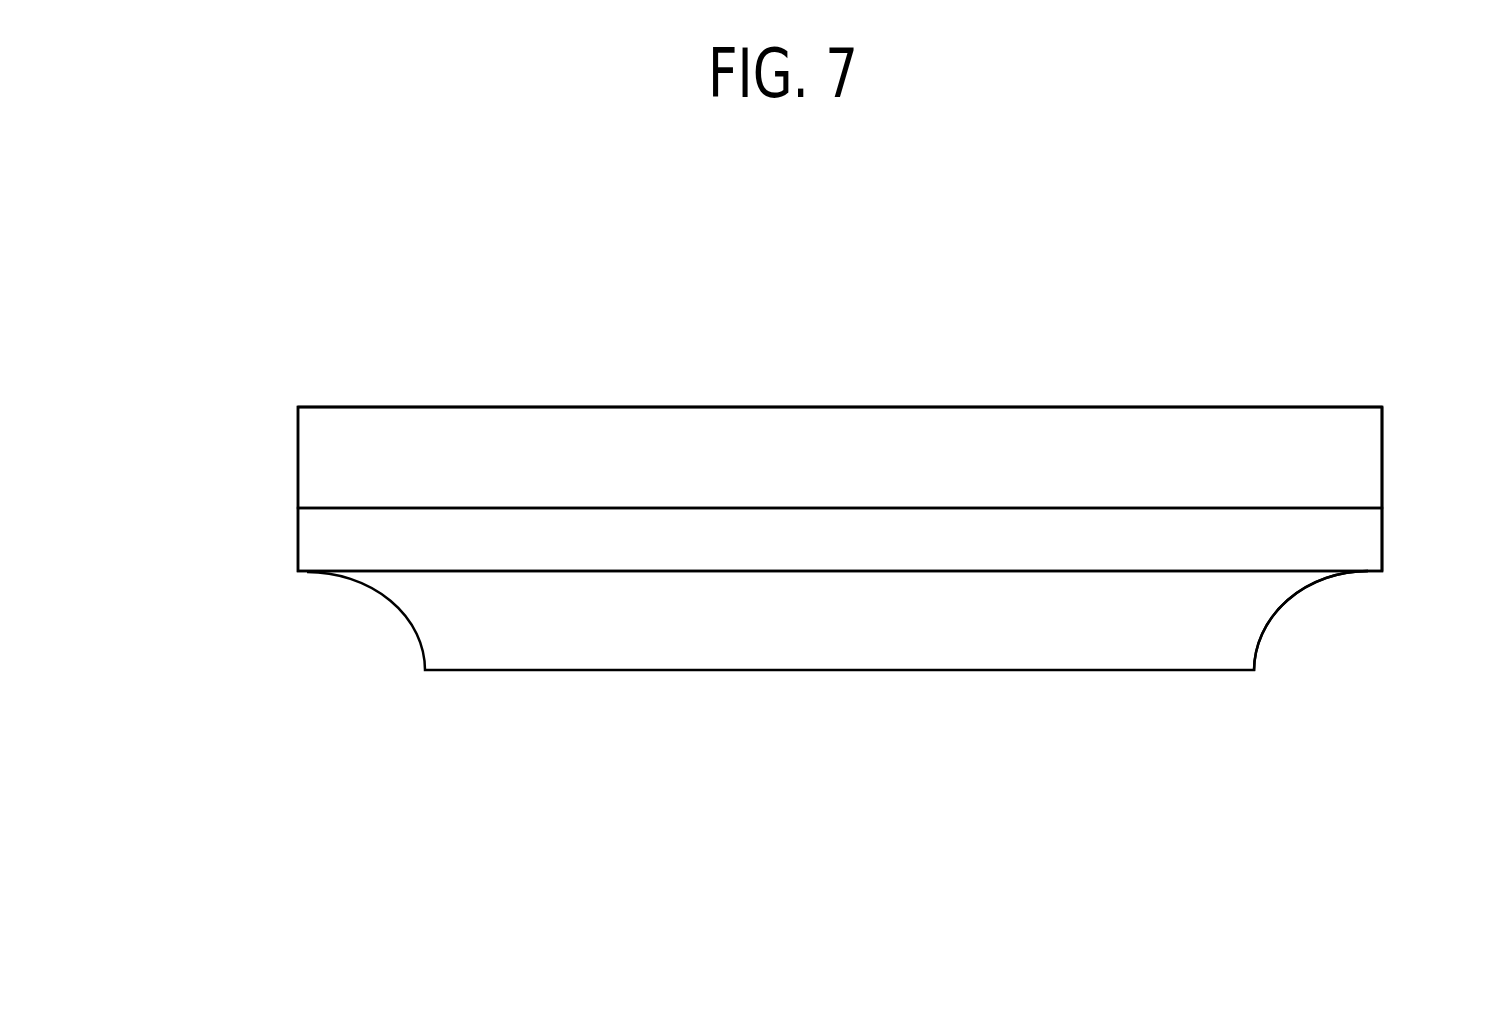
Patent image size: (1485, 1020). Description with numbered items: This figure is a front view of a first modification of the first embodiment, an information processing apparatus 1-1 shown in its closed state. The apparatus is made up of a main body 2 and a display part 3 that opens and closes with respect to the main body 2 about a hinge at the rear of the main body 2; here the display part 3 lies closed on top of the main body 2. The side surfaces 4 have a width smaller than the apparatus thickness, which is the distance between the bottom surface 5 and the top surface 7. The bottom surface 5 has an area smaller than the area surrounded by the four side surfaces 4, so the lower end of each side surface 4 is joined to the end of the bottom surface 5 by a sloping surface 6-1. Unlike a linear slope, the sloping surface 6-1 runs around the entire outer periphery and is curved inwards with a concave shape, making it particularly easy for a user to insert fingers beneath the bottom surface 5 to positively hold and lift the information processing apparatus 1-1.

The information processing apparatus 1-1 is at (1214, 217).
The main body 2 is at (312, 546).
The display part 3 is at (312, 450).
The side surface 4 is at (1382, 461).
The bottom surface 5 is at (882, 671).
The sloping surface 6-1 is at (1307, 608).
The top surface 7 is at (942, 407).